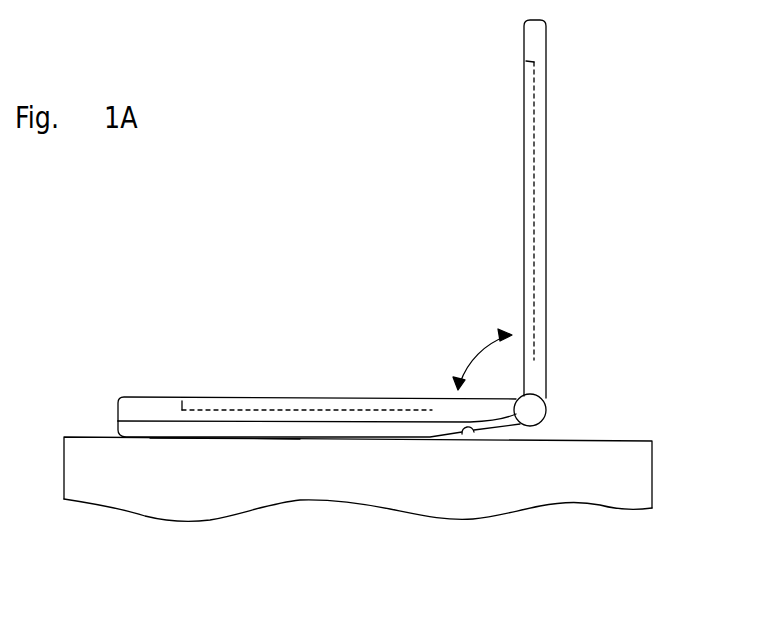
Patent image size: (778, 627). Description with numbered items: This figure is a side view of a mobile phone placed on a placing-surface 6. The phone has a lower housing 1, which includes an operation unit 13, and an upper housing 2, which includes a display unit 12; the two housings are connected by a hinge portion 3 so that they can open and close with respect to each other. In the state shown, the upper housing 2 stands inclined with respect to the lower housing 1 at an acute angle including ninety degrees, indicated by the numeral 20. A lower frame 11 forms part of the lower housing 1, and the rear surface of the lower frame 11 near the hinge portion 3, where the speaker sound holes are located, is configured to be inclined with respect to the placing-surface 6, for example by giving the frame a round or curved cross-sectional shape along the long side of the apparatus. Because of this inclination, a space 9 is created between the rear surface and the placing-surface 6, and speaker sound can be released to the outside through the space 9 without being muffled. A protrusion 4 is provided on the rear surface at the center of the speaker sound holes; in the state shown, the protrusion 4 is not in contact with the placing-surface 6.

The lower housing 1 is at (142, 406).
The upper housing 2 is at (540, 142).
The hinge portion 3 is at (537, 410).
The protrusion 4 is at (470, 441).
The placing-surface 6 is at (611, 440).
The space 9 is at (508, 432).
The lower frame 11 is at (215, 432).
The display unit 12 is at (523, 192).
The operation unit 13 is at (282, 396).
The angle between the upper housing and the lower housing 20 is at (476, 344).